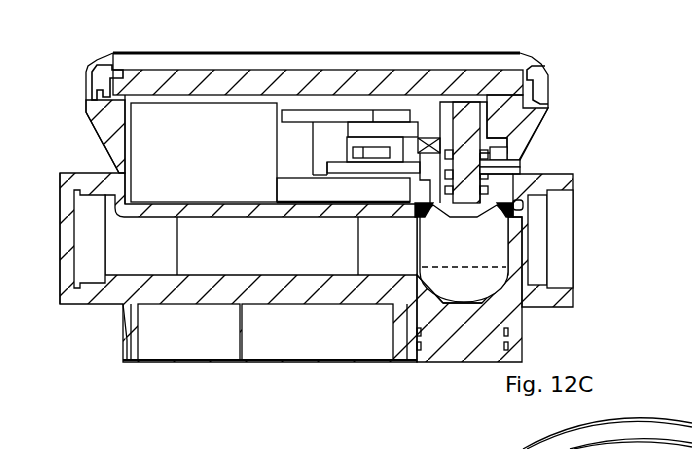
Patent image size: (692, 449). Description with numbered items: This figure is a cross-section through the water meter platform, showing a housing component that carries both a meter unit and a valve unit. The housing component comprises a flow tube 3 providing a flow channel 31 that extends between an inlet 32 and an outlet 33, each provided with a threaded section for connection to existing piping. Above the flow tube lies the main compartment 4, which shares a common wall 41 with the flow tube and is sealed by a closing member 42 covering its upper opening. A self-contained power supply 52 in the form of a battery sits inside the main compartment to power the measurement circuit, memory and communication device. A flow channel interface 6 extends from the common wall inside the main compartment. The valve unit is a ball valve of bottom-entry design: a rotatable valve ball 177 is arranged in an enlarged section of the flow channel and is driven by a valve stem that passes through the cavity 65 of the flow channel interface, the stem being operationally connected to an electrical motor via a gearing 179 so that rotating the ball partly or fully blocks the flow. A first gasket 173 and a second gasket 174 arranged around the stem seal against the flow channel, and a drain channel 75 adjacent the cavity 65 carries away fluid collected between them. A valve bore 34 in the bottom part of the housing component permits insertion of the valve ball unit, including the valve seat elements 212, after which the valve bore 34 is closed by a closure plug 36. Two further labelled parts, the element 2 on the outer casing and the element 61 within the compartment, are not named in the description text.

The cap 2 is at (95, 166).
The flow tube 3 is at (337, 292).
The main compartment 4 is at (99, 80).
The flow channel interface 6 is at (440, 178).
The flow channel 31 is at (221, 254).
The inlet 32 is at (83, 293).
The outlet 33 is at (558, 302).
The valve bore 34 is at (435, 345).
The closure plug 36 is at (450, 350).
The common wall 41 is at (313, 208).
The closing member 42 is at (532, 72).
The self-contained power supply 52 is at (213, 113).
The sensor 61 is at (420, 138).
The cavity 65 is at (513, 207).
The drain channel 75 is at (520, 165).
The first gasket 173 is at (520, 183).
The second gasket 174 is at (517, 150).
The valve ball 177 is at (478, 283).
The gearing 179 is at (353, 128).
The valve seat elements 212 is at (405, 300).